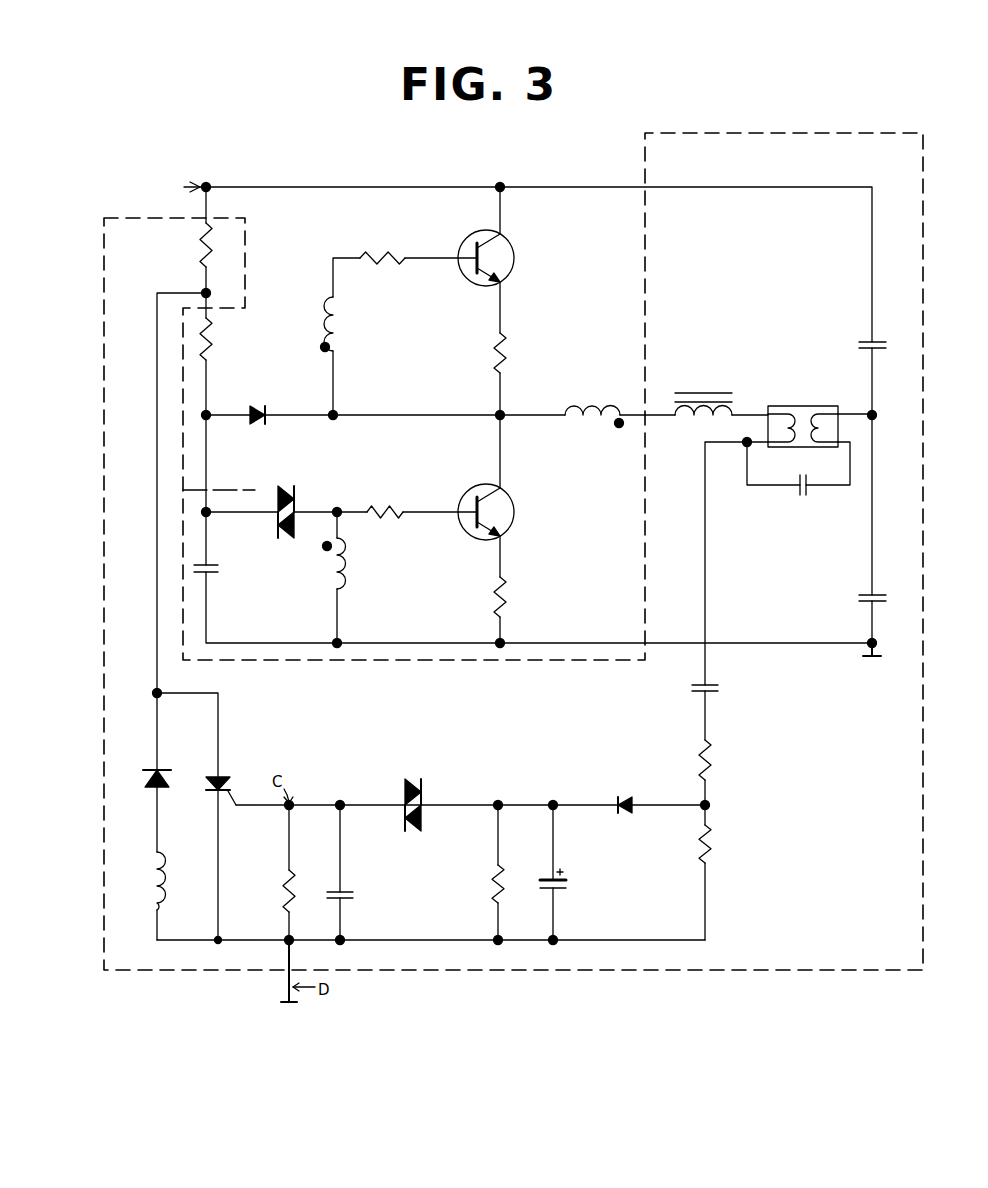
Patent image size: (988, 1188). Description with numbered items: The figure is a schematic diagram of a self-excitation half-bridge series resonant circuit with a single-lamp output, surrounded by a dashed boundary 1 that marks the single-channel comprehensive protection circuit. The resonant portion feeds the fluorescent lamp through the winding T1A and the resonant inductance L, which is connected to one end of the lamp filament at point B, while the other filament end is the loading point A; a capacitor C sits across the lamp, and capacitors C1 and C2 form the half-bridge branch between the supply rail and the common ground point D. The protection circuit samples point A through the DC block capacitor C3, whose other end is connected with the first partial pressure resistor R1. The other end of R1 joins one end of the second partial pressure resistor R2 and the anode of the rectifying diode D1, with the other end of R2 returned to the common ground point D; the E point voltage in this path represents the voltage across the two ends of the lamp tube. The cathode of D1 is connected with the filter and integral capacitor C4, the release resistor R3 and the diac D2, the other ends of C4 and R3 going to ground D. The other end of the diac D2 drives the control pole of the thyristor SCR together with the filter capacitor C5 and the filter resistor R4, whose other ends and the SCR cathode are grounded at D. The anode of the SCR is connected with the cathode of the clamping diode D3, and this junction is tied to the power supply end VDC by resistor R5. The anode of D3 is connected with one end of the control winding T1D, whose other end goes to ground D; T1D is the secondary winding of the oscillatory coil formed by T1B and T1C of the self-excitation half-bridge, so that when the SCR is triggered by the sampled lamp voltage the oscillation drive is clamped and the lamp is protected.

The ballast control circuit 1 is at (98, 727).
The power supply end VDC is at (175, 190).
The resistor R5 is at (220, 240).
The oscillatory coil T1B is at (348, 336).
The transformer winding T1A is at (594, 408).
The resonant inductance L is at (703, 395).
The capacitor C is at (793, 495).
The loading point of the fluorescent lamp filament A is at (746, 444).
The node B is at (876, 415).
The capacitor C1 is at (866, 371).
The capacitor C2 is at (866, 529).
The common ground point D is at (878, 645).
The oscillatory coil T1C is at (351, 577).
The DC block capacitor C3 is at (693, 704).
The E point E is at (708, 709).
The first partial pressure resistor R1 is at (716, 772).
The second partial pressure resistor R2 is at (716, 872).
The rectifying diode D1 is at (661, 795).
The diac D2 is at (428, 804).
The release resistor R3 is at (484, 872).
The filter and integral capacitor C4 is at (561, 872).
The filter resistor R4 is at (278, 872).
The filter capacitor C5 is at (351, 872).
The clamping diode D3 is at (164, 771).
The control winding T1D is at (177, 896).
The thyristor SCR is at (205, 816).